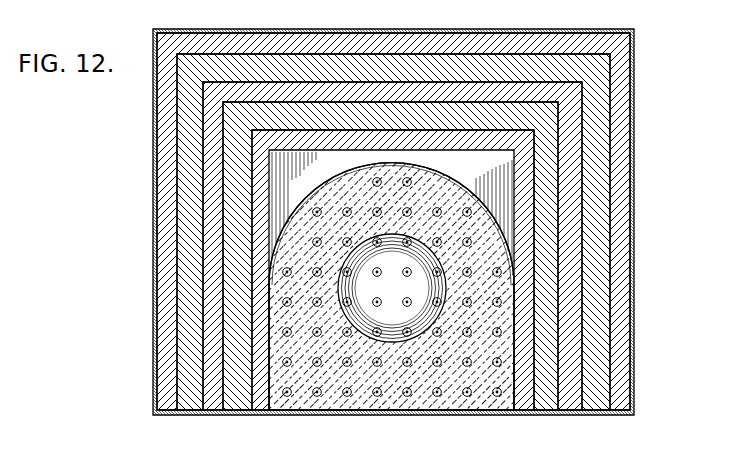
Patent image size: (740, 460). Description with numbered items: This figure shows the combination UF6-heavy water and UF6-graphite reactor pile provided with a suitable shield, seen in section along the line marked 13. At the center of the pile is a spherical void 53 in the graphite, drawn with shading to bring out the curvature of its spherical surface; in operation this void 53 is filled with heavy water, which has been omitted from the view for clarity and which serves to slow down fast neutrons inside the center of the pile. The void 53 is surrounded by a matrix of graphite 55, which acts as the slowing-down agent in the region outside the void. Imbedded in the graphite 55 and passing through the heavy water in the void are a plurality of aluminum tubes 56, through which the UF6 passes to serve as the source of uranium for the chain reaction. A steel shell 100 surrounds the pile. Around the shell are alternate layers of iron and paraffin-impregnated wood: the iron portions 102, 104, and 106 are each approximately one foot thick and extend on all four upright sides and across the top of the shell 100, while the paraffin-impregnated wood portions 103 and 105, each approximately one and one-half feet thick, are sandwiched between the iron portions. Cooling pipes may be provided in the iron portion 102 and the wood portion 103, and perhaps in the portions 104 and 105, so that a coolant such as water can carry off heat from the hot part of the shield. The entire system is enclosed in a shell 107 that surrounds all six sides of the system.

The section line 13- 13 is at (187, 287).
The void 53 is at (471, 189).
The graphite 55 is at (480, 403).
The aluminum tubes 56 is at (375, 180).
The steel shell 100 is at (406, 404).
The iron portion 102 is at (262, 405).
The paraffin-impregnated wood portion 103 is at (240, 409).
The iron portion 104 is at (212, 410).
The paraffin-impregnated wood portion 105 is at (189, 412).
The iron portion 106 is at (165, 413).
The shell 107 is at (343, 410).